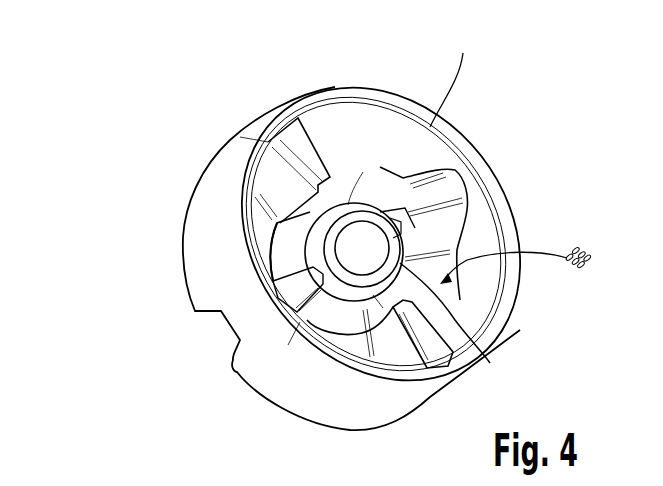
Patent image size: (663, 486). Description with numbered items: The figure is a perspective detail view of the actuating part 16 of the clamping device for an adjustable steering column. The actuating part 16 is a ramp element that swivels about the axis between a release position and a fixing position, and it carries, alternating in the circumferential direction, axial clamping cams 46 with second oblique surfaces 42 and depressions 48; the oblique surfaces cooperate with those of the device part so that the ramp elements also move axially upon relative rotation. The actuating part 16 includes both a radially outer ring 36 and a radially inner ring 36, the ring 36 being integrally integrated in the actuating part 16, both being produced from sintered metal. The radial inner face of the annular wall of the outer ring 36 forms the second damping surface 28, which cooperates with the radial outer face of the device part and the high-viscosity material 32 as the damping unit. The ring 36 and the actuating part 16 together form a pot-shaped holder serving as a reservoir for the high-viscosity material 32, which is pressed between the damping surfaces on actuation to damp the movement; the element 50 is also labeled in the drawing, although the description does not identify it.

The actuating part 16 is at (148, 131).
The second damping surface 28 is at (477, 302).
The high-viscosity material 32 is at (590, 257).
The ring 36 is at (447, 130).
The second oblique surfaces 42 is at (280, 170).
The axial clamping cams 46 is at (336, 128).
The depressions 48 is at (256, 216).
The vane 50 is at (316, 150).